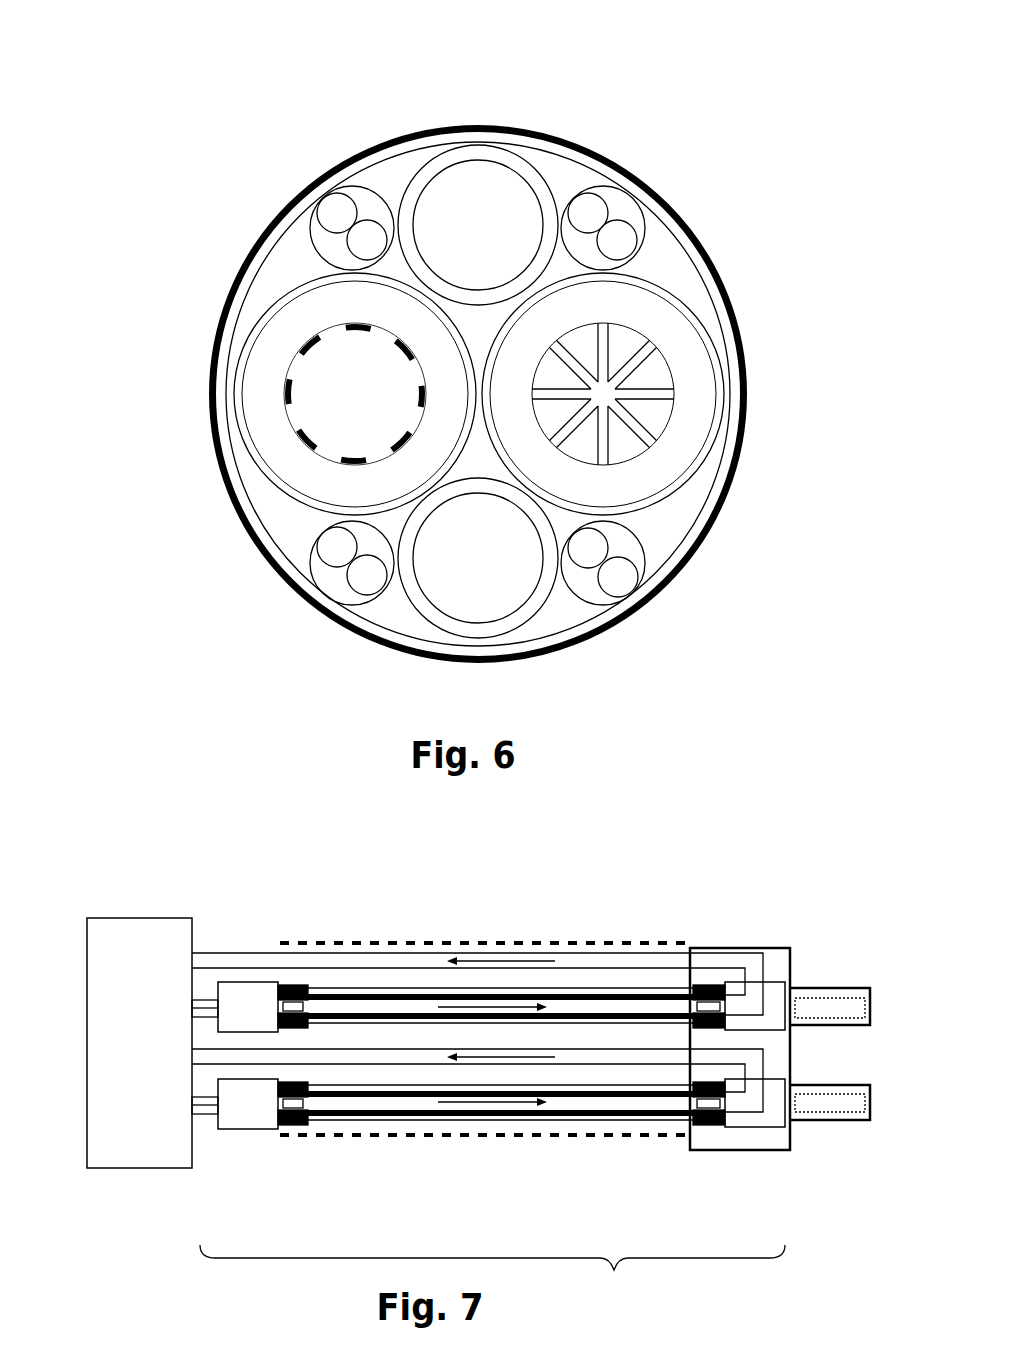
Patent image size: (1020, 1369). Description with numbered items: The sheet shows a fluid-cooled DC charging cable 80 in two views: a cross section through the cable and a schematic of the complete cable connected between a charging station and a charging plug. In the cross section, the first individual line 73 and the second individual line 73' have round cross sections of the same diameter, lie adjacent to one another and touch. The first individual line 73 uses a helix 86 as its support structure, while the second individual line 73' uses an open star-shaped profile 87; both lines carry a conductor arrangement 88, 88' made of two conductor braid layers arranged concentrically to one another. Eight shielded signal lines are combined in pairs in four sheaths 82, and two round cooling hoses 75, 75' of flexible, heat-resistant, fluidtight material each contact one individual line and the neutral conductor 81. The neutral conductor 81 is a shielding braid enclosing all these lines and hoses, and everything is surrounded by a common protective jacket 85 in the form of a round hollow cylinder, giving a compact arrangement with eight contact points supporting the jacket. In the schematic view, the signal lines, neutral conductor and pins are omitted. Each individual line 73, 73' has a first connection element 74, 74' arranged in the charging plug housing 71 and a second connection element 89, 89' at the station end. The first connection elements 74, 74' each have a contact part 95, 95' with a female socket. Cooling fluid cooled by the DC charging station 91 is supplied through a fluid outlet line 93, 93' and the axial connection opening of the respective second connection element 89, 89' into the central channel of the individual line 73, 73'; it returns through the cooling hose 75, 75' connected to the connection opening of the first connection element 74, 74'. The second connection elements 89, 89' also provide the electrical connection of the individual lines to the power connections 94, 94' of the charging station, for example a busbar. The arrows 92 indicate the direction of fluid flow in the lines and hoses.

In FIG. 6, the DC charging cable 80 is at (222, 104).
In FIG. 7, the DC charging cable 80 is at (492, 1283).
In FIG. 6, the cooling hose 75 is at (387, 154).
In FIG. 7, the cooling hose 75 is at (477, 1129).
In FIG. 6, the cooling hose 75' is at (445, 585).
In FIG. 7, the cooling hose 75' is at (477, 935).
In FIG. 6, the neutral conductor 81 is at (662, 218).
In FIG. 6, the sheath 82 is at (310, 222).
In FIG. 6, the helix 86 is at (310, 330).
In FIG. 6, the first individual line 73 is at (280, 384).
In FIG. 6, the second individual line 73' is at (677, 376).
In FIG. 7, the second individual line 73' is at (492, 1057).
In FIG. 6, the open star-shaped profile 87 is at (645, 388).
In FIG. 6, the conductor arrangement 88 is at (308, 397).
In FIG. 6, the conductor arrangement 88' is at (694, 394).
In FIG. 6, the protective jacket 85 is at (710, 533).
In FIG. 7, the protective jacket 85 is at (377, 1133).
In FIG. 7, the DC charging station 91 is at (140, 1170).
In FIG. 7, the fluid outlet line 93 is at (173, 981).
In FIG. 7, the fluid outlet line 93' is at (194, 932).
In FIG. 7, the power connection 94 is at (125, 1084).
In FIG. 7, the power connection 94' is at (123, 998).
In FIG. 7, the second connection element 89 is at (246, 1144).
In FIG. 7, the second connection element 89' is at (258, 966).
In FIG. 7, the flow arrows 92 is at (520, 1102).
In FIG. 7, the first connection element 74 is at (733, 1144).
In FIG. 7, the first connection element 74' is at (739, 964).
In FIG. 7, the charging plug housing 71 is at (770, 1150).
In FIG. 7, the contact part 95 is at (830, 1132).
In FIG. 7, the contact part 95' is at (830, 970).